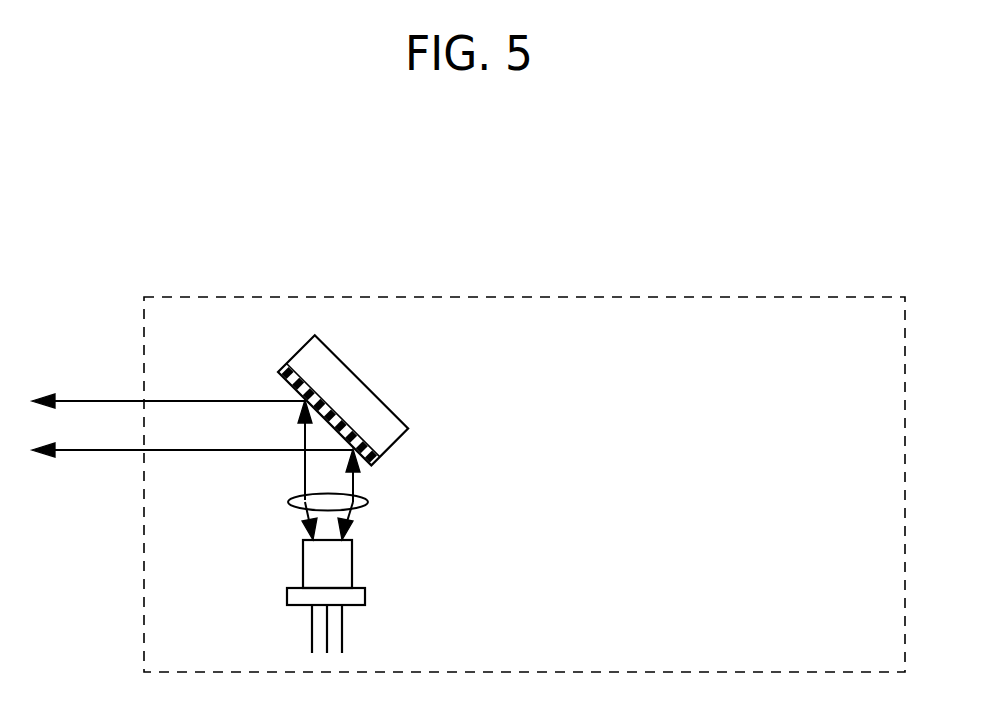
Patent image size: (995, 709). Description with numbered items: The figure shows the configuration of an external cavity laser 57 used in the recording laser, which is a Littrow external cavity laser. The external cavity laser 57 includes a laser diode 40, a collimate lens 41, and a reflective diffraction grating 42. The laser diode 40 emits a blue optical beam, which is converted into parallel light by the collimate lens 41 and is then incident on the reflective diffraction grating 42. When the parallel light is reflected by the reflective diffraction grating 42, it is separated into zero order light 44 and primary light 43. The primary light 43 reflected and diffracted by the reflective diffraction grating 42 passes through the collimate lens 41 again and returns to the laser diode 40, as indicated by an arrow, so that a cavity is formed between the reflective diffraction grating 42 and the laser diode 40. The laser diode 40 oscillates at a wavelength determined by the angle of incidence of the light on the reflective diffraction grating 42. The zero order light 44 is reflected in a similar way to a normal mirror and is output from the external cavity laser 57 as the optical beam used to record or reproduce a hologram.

The external cavity laser 57 is at (680, 297).
The zero order light 44 is at (82, 400).
The reflective diffraction grating 42 is at (370, 403).
The primary light 43 is at (355, 477).
The collimate lens 41 is at (367, 502).
The laser diode 40 is at (335, 572).